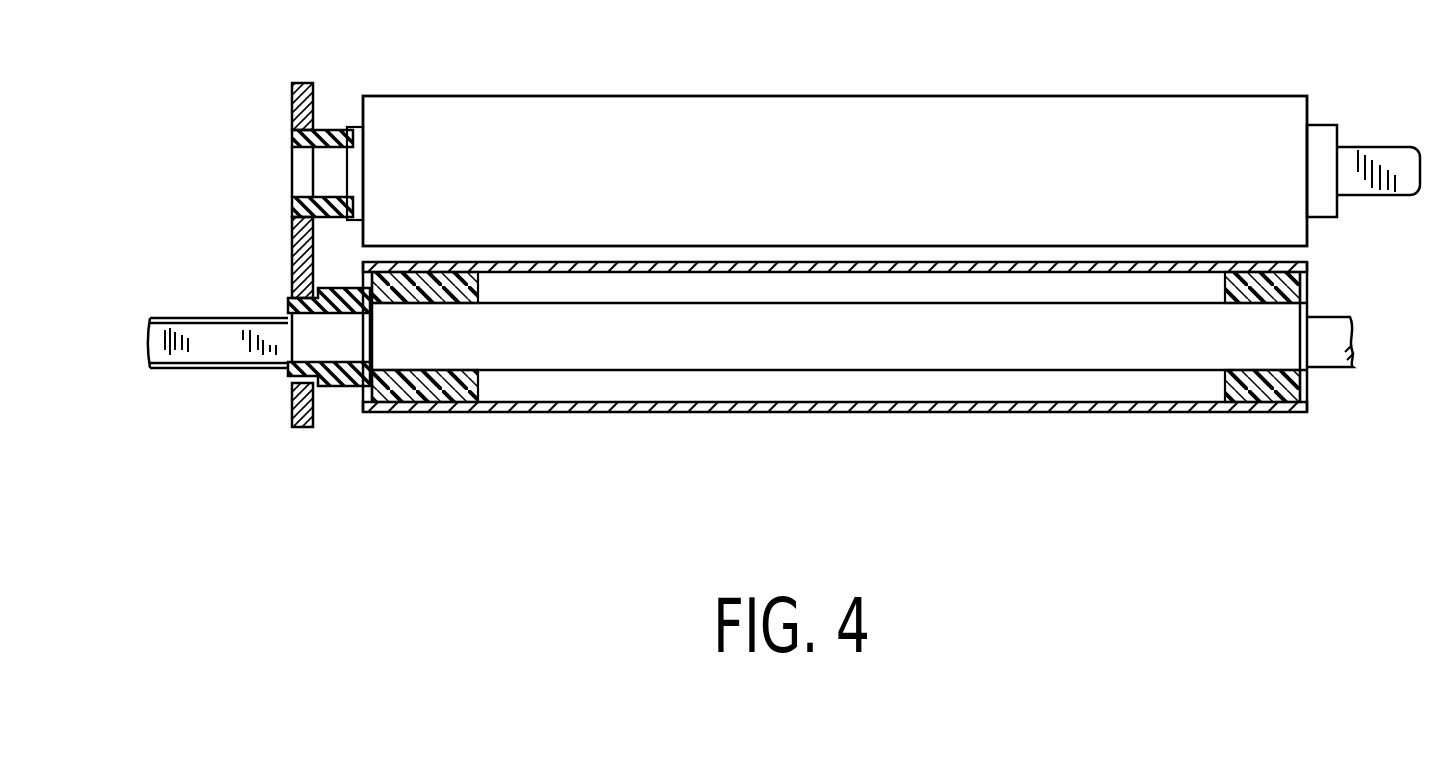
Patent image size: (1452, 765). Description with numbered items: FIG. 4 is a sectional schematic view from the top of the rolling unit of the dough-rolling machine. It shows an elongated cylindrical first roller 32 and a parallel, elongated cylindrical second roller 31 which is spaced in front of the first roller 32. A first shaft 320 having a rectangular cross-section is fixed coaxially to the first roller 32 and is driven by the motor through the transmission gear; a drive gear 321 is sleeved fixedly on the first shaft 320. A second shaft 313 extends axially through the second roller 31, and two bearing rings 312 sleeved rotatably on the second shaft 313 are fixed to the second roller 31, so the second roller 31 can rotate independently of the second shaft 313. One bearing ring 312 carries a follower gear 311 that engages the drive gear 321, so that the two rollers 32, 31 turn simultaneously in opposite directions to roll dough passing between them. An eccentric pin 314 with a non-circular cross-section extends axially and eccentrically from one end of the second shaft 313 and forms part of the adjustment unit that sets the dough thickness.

The second roller 31 is at (517, 405).
The follower gear 311 is at (292, 273).
The bearing rings 312 is at (413, 390).
The second shaft 313 is at (787, 350).
The eccentric pin 314 is at (195, 340).
The first roller 32 is at (605, 160).
The first shaft 320 is at (1387, 163).
The drive gear 321 is at (310, 88).